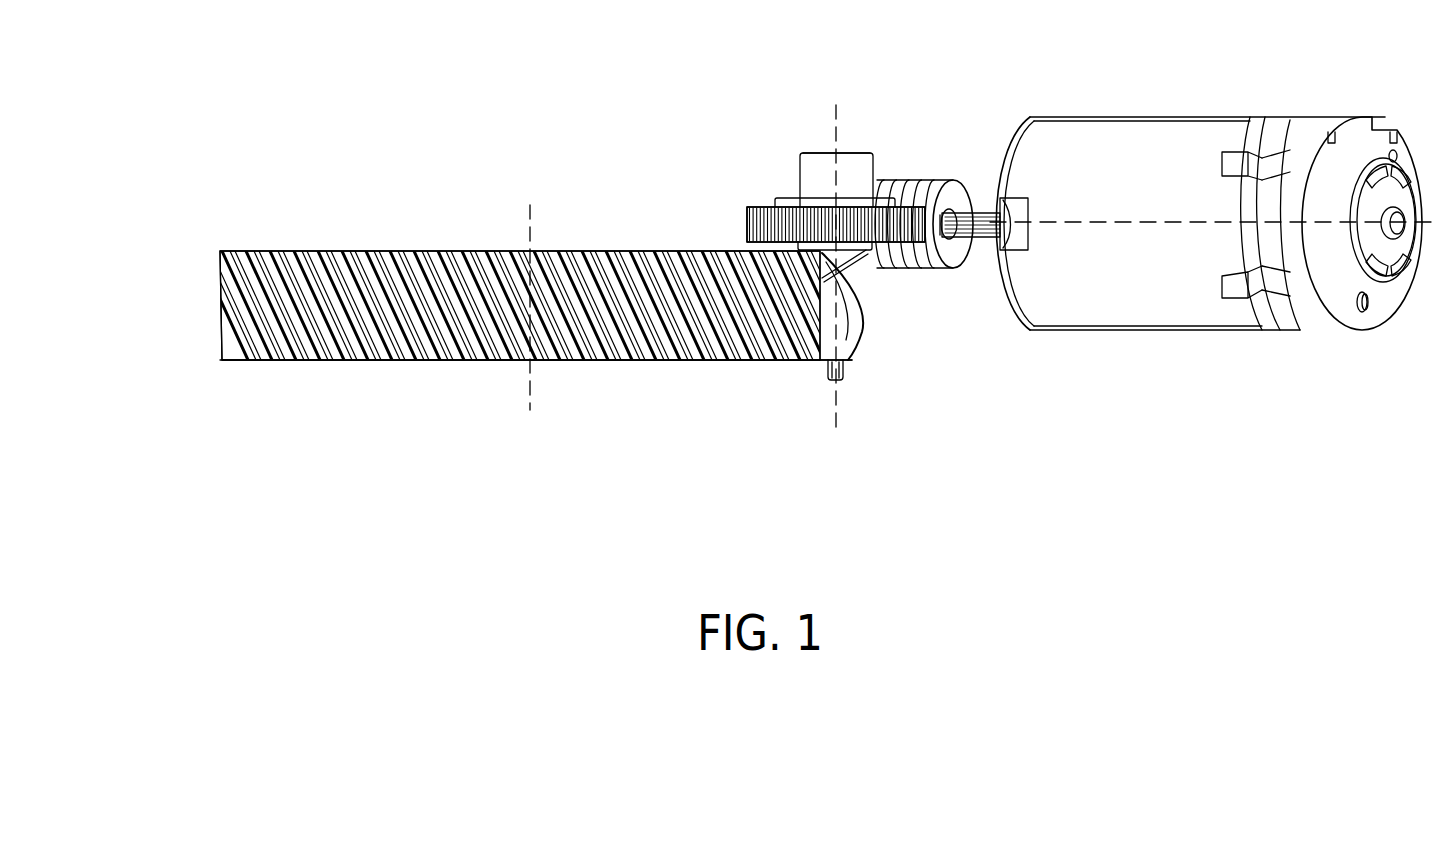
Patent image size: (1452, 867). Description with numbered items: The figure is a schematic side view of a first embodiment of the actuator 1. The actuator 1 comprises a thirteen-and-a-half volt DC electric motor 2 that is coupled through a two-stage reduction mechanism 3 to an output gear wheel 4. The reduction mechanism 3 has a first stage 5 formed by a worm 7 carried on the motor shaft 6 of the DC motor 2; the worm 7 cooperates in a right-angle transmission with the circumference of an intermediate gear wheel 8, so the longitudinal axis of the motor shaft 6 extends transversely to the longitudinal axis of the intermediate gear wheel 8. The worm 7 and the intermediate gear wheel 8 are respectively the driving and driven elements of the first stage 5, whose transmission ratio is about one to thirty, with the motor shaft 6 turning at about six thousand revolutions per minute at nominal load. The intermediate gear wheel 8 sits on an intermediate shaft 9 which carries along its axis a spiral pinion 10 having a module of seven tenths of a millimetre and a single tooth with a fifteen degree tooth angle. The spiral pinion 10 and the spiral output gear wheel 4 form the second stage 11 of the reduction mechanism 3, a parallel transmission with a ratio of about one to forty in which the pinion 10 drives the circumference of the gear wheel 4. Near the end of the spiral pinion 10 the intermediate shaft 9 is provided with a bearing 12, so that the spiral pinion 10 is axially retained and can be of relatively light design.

The actuator 1 is at (1035, 463).
The DC electric motor 2 is at (1140, 135).
The reduction mechanism 3 is at (178, 153).
The output gear wheel 4 is at (343, 263).
The first stage 5 is at (972, 87).
The motor shaft 6 is at (983, 240).
The worm 7 is at (956, 192).
The intermediate gear wheel 8 is at (760, 225).
The intermediate shaft 9 is at (802, 172).
The spiral pinion 10 is at (850, 323).
The second stage 11 is at (220, 457).
The bearing 12 is at (843, 368).